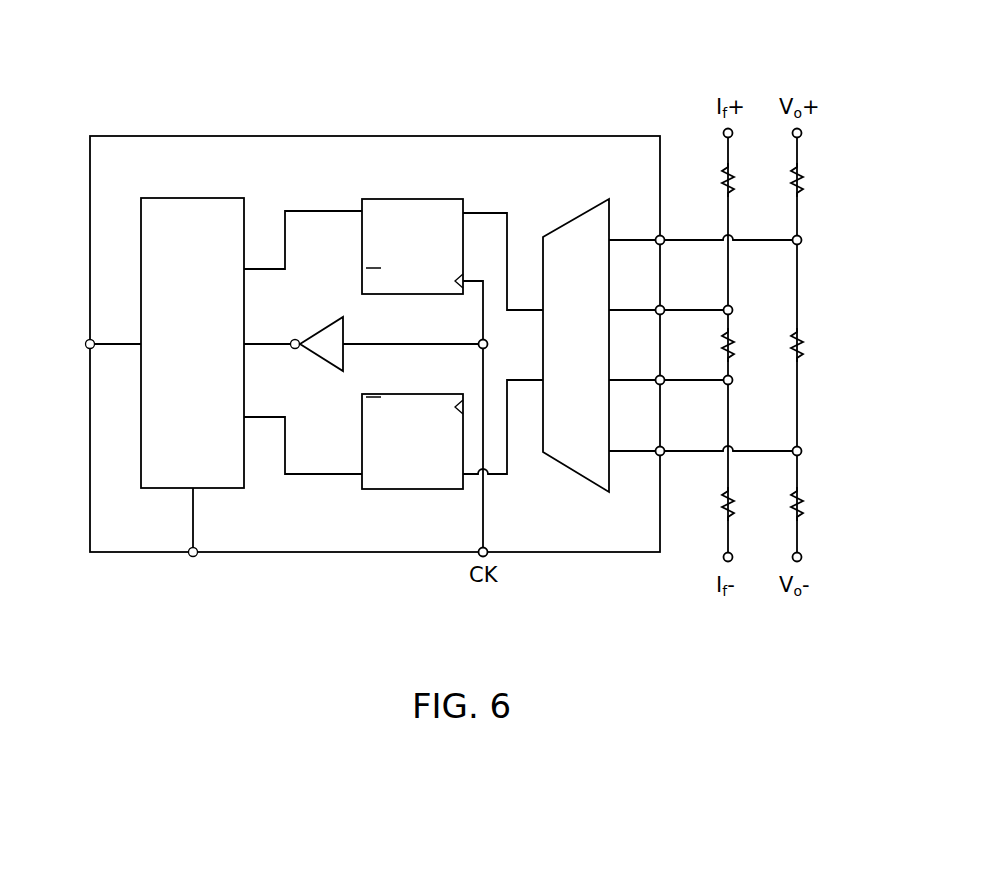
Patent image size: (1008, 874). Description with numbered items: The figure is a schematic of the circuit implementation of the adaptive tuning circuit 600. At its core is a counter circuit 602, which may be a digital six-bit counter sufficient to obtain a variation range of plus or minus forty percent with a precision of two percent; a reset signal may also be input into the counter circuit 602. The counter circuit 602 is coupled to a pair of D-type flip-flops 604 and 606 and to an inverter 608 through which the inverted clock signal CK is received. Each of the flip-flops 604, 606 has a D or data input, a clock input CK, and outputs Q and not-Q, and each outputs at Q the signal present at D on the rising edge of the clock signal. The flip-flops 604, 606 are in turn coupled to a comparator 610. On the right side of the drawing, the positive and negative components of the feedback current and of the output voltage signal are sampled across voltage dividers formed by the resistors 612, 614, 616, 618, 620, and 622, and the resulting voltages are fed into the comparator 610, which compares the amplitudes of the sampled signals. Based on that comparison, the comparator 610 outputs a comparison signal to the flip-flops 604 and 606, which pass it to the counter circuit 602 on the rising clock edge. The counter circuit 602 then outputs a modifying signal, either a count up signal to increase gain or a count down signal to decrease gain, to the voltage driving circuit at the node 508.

The adaptive tuning circuit 600 is at (146, 43).
The node 508 is at (86, 342).
The counter circuit 602 is at (211, 294).
The D-type flip-flop 604 is at (431, 256).
The D-type flip-flop 606 is at (431, 452).
The inverter 608 is at (343, 362).
The comparator 610 is at (594, 355).
The resistor 612 is at (722, 186).
The resistor 614 is at (803, 186).
The resistor 616 is at (722, 349).
The resistor 618 is at (803, 349).
The resistor 620 is at (722, 507).
The resistor 622 is at (803, 507).